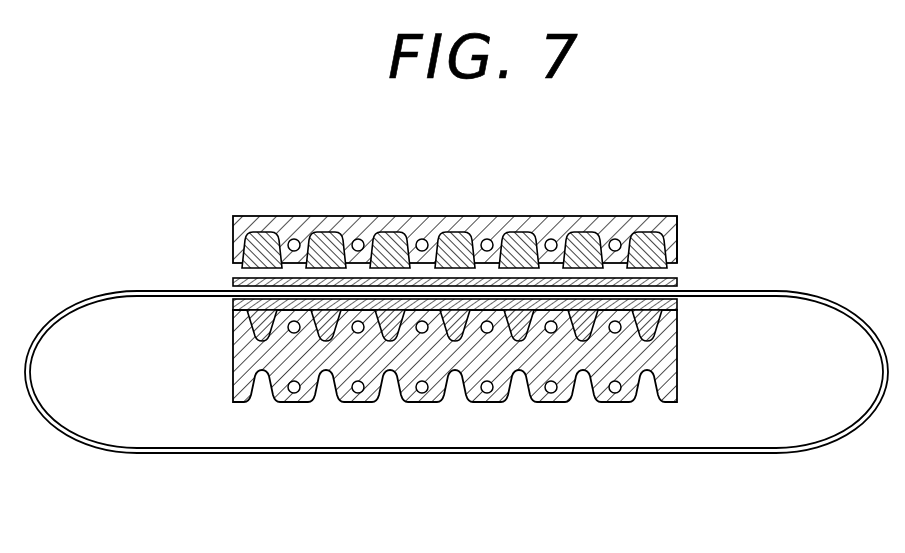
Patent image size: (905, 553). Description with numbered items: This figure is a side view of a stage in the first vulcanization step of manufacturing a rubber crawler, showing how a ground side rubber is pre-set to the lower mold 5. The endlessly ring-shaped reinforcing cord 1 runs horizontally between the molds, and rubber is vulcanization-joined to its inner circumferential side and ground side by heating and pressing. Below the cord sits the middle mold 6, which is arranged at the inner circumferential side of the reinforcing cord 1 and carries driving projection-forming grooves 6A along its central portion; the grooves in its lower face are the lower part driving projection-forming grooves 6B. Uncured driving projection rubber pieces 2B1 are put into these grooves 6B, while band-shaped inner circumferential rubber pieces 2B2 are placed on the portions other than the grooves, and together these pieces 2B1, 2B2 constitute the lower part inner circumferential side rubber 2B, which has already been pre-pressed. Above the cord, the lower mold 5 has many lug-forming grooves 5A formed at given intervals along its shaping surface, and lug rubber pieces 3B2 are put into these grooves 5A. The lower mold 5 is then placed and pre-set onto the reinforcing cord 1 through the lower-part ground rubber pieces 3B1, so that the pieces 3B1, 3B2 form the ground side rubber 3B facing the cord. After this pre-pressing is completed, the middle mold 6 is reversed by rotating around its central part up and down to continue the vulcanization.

The reinforcing cord 1 is at (716, 452).
The lower mold 5 is at (544, 210).
The lug-forming grooves 5A is at (678, 232).
The ground side rubber 3B is at (402, 211).
The lower-part ground rubber pieces 3B1 is at (301, 282).
The lug rubber pieces 3B2 is at (331, 238).
The middle mold 6 is at (682, 360).
The driving projection-forming grooves 6A is at (445, 386).
The lower part driving projection-forming grooves 6B is at (336, 338).
The lower part inner circumferential side rubber 2B is at (392, 361).
The driving projection rubber pieces 2B1 is at (252, 330).
The inner circumferential rubber pieces 2B2 is at (233, 304).